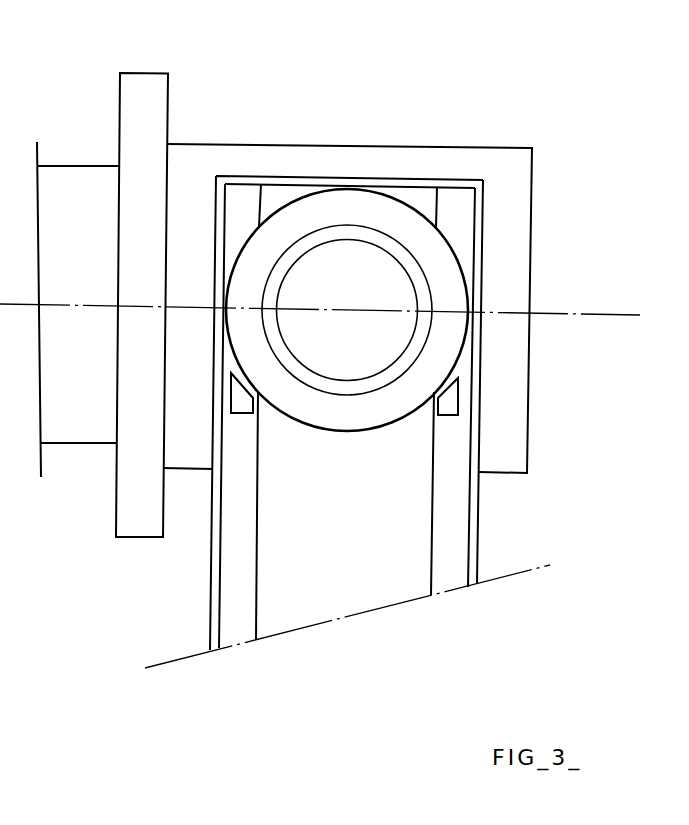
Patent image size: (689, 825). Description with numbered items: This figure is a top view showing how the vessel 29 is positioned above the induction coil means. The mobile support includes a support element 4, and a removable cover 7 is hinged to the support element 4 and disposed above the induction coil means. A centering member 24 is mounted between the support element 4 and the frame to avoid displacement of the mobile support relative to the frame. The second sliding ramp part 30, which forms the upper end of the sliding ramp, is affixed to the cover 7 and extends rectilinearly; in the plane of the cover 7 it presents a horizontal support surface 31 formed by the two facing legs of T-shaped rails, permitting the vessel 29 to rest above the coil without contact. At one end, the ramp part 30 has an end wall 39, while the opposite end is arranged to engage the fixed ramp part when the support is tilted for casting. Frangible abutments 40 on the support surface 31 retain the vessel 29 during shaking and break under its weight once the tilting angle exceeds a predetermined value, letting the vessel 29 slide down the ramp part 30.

The support element 4 is at (134, 88).
The removable cover 7 is at (502, 382).
The centering member 24 is at (77, 423).
The vessel 29 is at (432, 267).
The second sliding ramp part 30 is at (482, 509).
The horizontal support surface 31 is at (247, 217).
The end wall 39 is at (298, 184).
The frangible abutments 40 is at (448, 403).